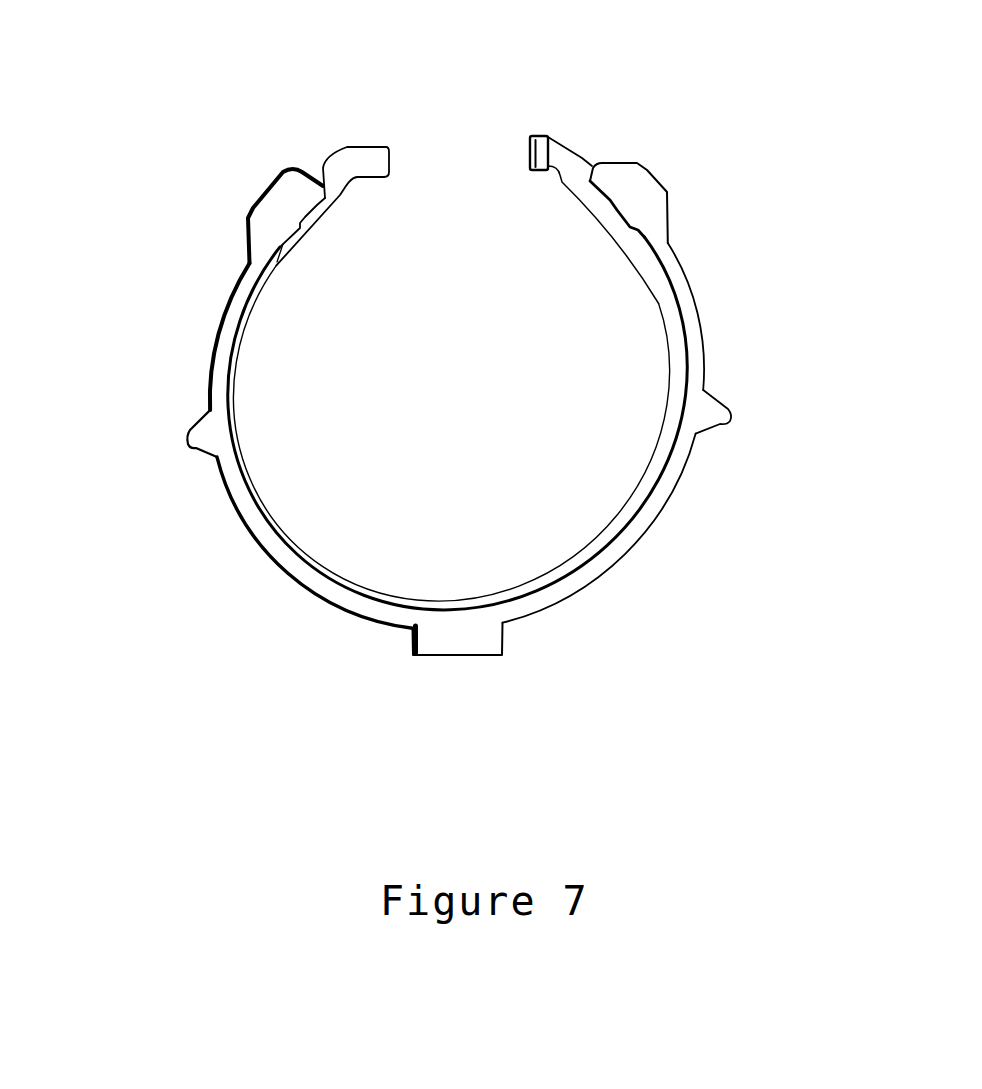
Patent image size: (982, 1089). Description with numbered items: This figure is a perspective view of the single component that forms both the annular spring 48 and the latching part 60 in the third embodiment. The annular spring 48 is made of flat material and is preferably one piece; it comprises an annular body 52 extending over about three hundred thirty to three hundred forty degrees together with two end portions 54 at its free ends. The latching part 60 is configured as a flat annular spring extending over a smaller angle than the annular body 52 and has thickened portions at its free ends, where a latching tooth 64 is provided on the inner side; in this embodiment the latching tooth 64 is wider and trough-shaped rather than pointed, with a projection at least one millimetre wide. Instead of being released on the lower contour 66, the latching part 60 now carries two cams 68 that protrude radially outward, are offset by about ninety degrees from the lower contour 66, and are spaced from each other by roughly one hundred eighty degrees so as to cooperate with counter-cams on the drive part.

The annular spring 48 is at (270, 279).
The annular body 52 is at (578, 173).
The end portions 54 is at (552, 140).
The latching part 60 is at (340, 593).
The latching tooth 64 is at (627, 218).
The lower contour 66 is at (458, 640).
The cam 68 is at (215, 437).